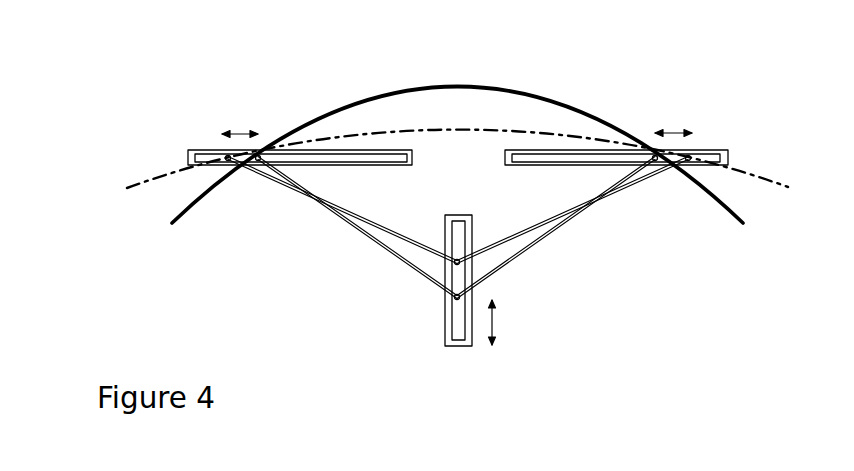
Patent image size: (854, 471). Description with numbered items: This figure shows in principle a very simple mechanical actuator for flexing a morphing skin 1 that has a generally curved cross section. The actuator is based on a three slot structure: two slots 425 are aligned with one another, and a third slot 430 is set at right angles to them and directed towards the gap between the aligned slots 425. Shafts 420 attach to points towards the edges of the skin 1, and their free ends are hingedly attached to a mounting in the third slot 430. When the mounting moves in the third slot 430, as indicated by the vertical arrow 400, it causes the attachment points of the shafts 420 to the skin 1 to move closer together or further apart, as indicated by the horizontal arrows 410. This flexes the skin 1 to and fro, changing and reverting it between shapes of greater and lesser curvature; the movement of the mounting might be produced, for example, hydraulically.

The morphing skin 1 is at (428, 87).
The vertical arrow 400 is at (495, 323).
The horizontal arrows 410 is at (242, 131).
The shafts 420 is at (527, 250).
The aligned slots 425 is at (196, 149).
The third slot 430 is at (445, 323).